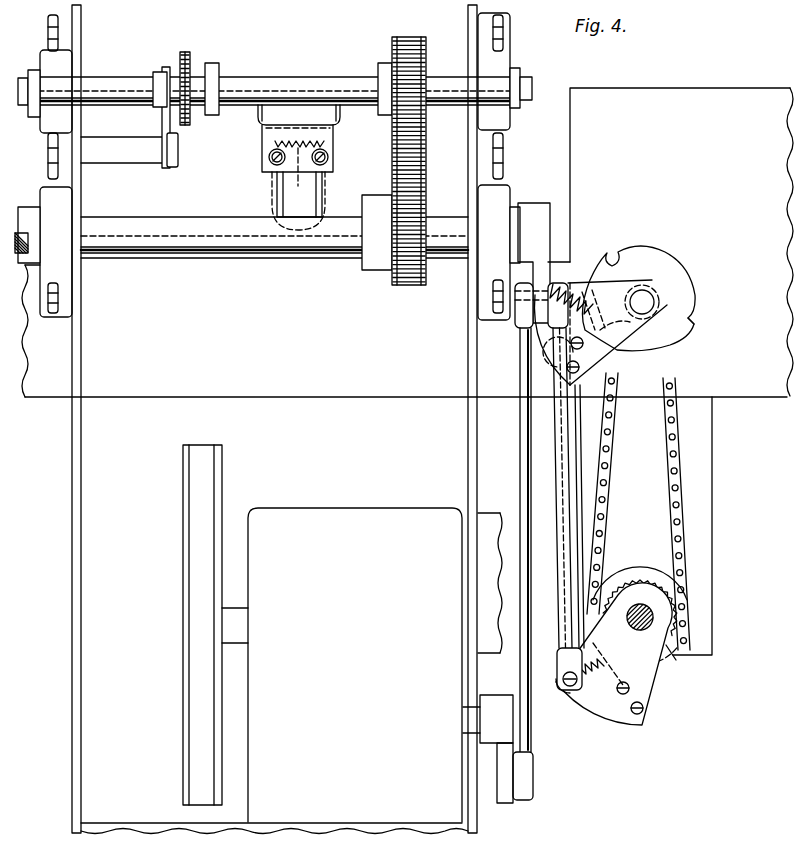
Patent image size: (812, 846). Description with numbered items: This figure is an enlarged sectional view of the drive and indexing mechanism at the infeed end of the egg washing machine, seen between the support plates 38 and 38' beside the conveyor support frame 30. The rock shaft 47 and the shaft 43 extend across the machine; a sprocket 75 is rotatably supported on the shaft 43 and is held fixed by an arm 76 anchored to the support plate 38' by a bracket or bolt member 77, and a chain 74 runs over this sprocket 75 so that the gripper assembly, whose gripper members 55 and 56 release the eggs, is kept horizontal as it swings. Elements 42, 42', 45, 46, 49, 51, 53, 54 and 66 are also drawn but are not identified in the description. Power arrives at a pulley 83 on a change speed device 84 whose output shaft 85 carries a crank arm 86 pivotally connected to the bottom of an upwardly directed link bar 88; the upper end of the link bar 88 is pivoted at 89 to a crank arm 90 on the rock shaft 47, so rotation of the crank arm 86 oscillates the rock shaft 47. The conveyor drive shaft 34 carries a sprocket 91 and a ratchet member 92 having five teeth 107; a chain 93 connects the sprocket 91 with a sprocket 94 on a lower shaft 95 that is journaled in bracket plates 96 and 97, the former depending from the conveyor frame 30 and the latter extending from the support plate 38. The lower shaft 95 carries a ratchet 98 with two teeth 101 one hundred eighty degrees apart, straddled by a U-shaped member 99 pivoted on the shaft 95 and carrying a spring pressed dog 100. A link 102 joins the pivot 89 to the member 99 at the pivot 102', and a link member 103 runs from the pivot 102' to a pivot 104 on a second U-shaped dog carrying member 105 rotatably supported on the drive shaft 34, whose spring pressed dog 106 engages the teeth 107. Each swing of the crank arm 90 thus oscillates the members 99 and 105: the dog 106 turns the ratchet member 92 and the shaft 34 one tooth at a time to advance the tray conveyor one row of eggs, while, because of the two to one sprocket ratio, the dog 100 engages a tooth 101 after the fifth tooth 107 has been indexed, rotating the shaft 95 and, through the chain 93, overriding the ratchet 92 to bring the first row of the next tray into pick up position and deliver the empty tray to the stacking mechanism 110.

The conveyor support frame 30 is at (40, 398).
The conveyor drive shaft 34 is at (643, 290).
The support plate 38 is at (448, 419).
The support plate 38' is at (98, 419).
The collar 42 is at (370, 75).
The collar 42' is at (228, 76).
The shaft 43 is at (272, 78).
The gear 45 is at (418, 38).
The pinion block 46 is at (401, 287).
The rock shaft 47 is at (110, 223).
The bracket 49 is at (258, 112).
The plate 51 is at (336, 144).
The screw 53 is at (268, 156).
The screw 54 is at (329, 158).
The gripper member 55 is at (273, 189).
The gripper member 56 is at (325, 192).
The slot 66 is at (299, 177).
The chain 74 is at (187, 52).
The sprocket 75 is at (166, 71).
The arm 76 is at (161, 125).
The bracket or bolt member 77 is at (110, 133).
The pulley 83 is at (184, 580).
The change speed device 84 is at (333, 508).
The output shaft 85 is at (480, 696).
The crank arm 86 is at (497, 802).
The link bar 88 is at (518, 433).
The pivot 89 is at (522, 305).
The crank arm 90 is at (546, 262).
The sprocket 91 is at (660, 302).
The ratchet member 92 is at (655, 256).
The chain 93 is at (676, 386).
The sprocket 94 is at (673, 656).
The shaft 95 is at (640, 631).
The bracket plate 96 is at (712, 543).
The bracket plate 97 is at (489, 513).
The ratchet 98 is at (650, 572).
The U-shaped dog carrying member 99 is at (614, 725).
The spring pressed dog 100 is at (601, 675).
The teeth 101 is at (611, 566).
The link 102 is at (602, 488).
The pivot 102' is at (564, 688).
The link member 103 is at (582, 423).
The pivot 104 is at (585, 361).
The U-shaped dog carrying member 105 is at (578, 283).
The spring pressed dog 106 is at (618, 320).
The teeth 107 is at (690, 328).
The stacking mechanism 110 is at (722, 90).